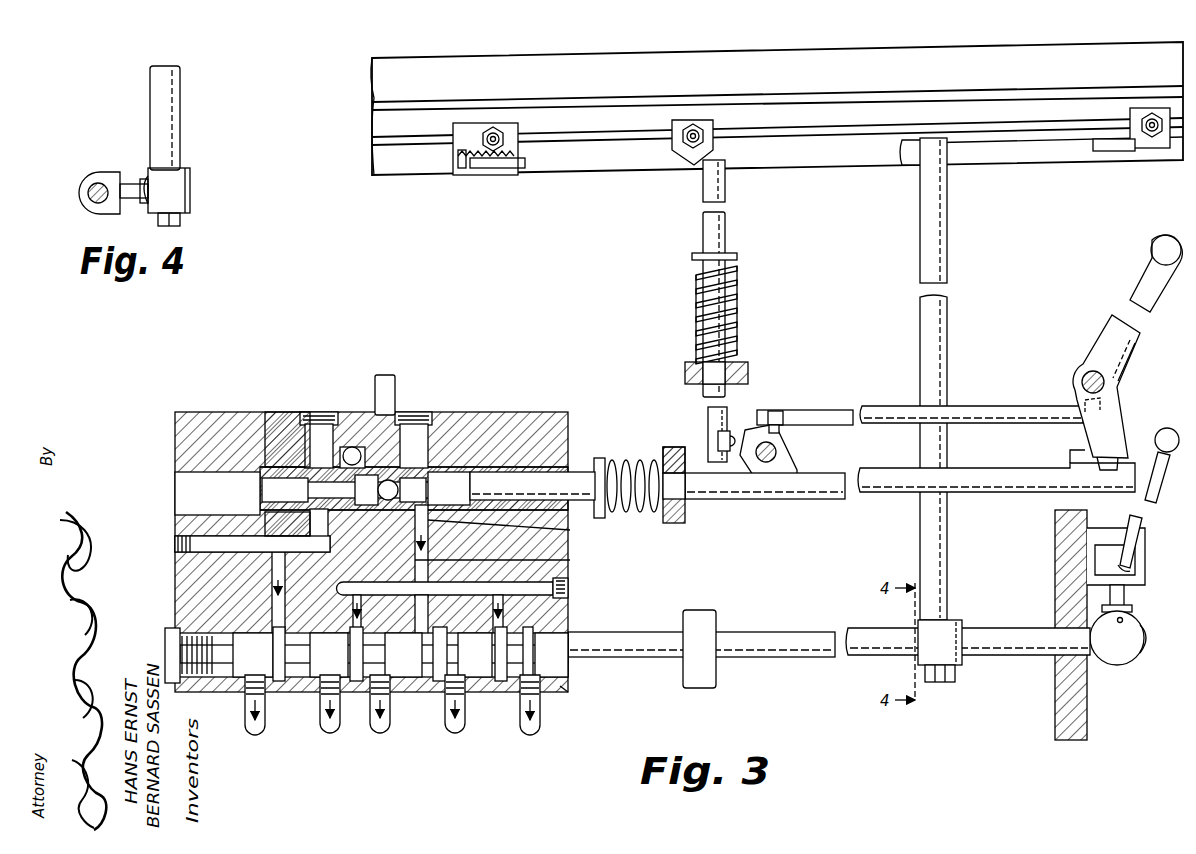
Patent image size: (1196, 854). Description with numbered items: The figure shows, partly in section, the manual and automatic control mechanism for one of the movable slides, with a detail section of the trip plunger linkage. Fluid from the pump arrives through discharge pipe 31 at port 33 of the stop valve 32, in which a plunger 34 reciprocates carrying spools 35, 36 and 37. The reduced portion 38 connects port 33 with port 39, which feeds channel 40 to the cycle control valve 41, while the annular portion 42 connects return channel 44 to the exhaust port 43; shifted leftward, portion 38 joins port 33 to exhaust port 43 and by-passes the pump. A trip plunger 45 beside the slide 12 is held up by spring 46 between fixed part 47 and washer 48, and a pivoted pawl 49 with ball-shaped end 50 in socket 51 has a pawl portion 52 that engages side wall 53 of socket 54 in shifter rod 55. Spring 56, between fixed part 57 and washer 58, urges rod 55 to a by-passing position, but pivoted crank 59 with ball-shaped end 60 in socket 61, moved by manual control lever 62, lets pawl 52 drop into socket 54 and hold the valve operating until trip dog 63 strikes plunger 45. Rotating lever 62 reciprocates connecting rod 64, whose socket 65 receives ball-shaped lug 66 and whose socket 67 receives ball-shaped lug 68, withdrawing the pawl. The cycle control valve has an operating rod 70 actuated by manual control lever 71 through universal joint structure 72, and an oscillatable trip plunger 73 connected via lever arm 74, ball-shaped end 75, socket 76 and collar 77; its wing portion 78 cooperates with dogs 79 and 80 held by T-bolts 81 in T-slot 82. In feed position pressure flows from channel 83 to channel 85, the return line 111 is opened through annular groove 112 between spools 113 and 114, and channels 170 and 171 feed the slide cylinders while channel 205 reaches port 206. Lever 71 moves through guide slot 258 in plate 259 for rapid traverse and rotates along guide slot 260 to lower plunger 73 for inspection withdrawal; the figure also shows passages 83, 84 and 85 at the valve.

In FIG. 3, the slide 12 is at (1155, 52).
In FIG. 3, the discharge pipe 31 is at (393, 380).
In FIG. 3, the stop valve 32 is at (175, 442).
In FIG. 3, the port 33 is at (392, 480).
In FIG. 3, the plunger 34 is at (262, 490).
In FIG. 3, the spool 35 is at (455, 478).
In FIG. 3, the spool 36 is at (352, 447).
In FIG. 3, the spool 37 is at (265, 424).
In FIG. 3, the reduced portion 38 is at (432, 482).
In FIG. 3, the port 39 is at (513, 529).
In FIG. 3, the channel 40 is at (507, 557).
In FIG. 3, the cycle control valve 41 is at (565, 690).
In FIG. 3, the annular portion 42 is at (285, 490).
In FIG. 3, the exhaust port 43 is at (330, 488).
In FIG. 3, the return channel 44 is at (210, 541).
In FIG. 3, the trip plunger 45 is at (725, 236).
In FIG. 3, the spring 46 is at (738, 298).
In FIG. 3, the fixed part 47 is at (740, 362).
In FIG. 3, the washer 48 is at (692, 256).
In FIG. 3, the pivoted pawl 49 is at (790, 458).
In FIG. 3, the ball-shaped end 50 is at (733, 437).
In FIG. 3, the socket 51 is at (708, 440).
In FIG. 3, the pawl portion 52 is at (797, 470).
In FIG. 3, the side wall 53 is at (800, 482).
In FIG. 3, the socket 54 is at (770, 500).
In FIG. 3, the shifter rod 55 is at (657, 530).
In FIG. 3, the spring 56 is at (630, 455).
In FIG. 3, the fixed part 57 is at (665, 450).
In FIG. 3, the washer 58 is at (598, 455).
In FIG. 3, the pivoted crank 59 is at (1122, 420).
In FIG. 3, the ball-shaped end 60 is at (1128, 444).
In FIG. 3, the socket 61 is at (1080, 458).
In FIG. 3, the manual control lever 62 is at (1140, 282).
In FIG. 3, the trip dog 63 is at (684, 158).
In FIG. 3, the connecting rod 64 is at (1012, 412).
In FIG. 3, the socket 65 is at (1095, 410).
In FIG. 3, the ball-shaped lug 66 is at (1104, 392).
In FIG. 3, the socket 67 is at (775, 420).
In FIG. 3, the ball-shaped lug 68 is at (779, 430).
In FIG. 4, the operating rod 70 is at (78, 191).
In FIG. 3, the operating rod 70 is at (808, 630).
In FIG. 3, the manual control lever 71 is at (1124, 596).
In FIG. 3, the universal joint structure 72 is at (1132, 627).
In FIG. 4, the trip plunger 73 is at (183, 118).
In FIG. 3, the trip plunger 73 is at (940, 235).
In FIG. 4, the lever arm 74 is at (130, 184).
In FIG. 4, the ball-shaped end 75 is at (143, 205).
In FIG. 4, the socket 76 is at (160, 182).
In FIG. 4, the collar 77 is at (178, 203).
In FIG. 3, the wing portion 78 is at (905, 160).
In FIG. 3, the dog 79 is at (454, 150).
In FIG. 3, the dog 80 is at (1157, 138).
In FIG. 3, the T-bolts 81 is at (1140, 135).
In FIG. 3, the T-slot 82 is at (1052, 128).
In FIG. 3, the channel 83 is at (383, 665).
In FIG. 3, the ring 84 is at (370, 700).
In FIG. 3, the channel 85 is at (340, 715).
In FIG. 3, the return line 111 is at (250, 725).
In FIG. 3, the annular groove 112 is at (318, 660).
In FIG. 3, the spool 113 is at (245, 660).
In FIG. 3, the spool 114 is at (300, 680).
In FIG. 3, the channel 170 is at (390, 705).
In FIG. 3, the channel 171 is at (465, 703).
In FIG. 3, the channel 205 is at (535, 690).
In FIG. 3, the port 206 is at (530, 670).
In FIG. 3, the guide slot 258 is at (1100, 560).
In FIG. 3, the plate 259 is at (1142, 552).
In FIG. 3, the guide slot 260 is at (1135, 572).